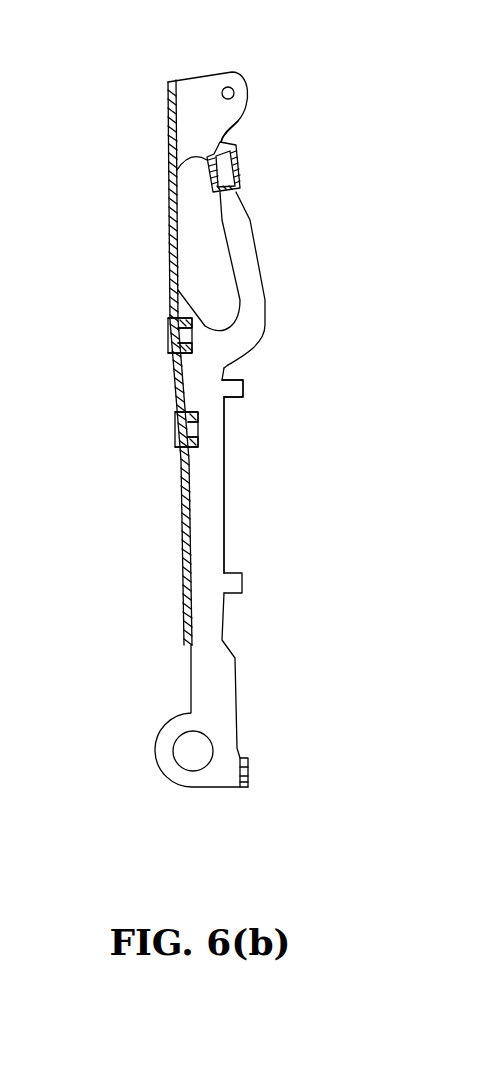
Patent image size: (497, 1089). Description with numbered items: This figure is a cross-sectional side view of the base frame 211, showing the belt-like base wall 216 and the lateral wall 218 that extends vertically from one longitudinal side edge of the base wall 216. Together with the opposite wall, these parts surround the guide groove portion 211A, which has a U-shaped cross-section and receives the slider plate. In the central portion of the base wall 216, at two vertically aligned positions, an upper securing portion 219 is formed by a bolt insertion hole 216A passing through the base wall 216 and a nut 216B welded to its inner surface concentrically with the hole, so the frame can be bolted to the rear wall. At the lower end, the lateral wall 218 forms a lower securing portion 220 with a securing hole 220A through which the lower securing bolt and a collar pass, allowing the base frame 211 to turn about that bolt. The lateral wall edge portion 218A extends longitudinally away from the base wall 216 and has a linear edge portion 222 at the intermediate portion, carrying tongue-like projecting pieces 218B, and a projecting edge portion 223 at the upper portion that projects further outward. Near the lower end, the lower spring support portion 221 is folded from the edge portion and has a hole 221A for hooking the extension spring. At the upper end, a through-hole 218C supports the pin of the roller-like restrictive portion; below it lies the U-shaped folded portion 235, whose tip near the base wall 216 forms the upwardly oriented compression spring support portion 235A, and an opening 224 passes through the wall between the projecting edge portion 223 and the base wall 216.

The base frame 211 is at (314, 34).
The guide groove portion 211A is at (210, 361).
The base wall 216 is at (168, 258).
The bolt insertion hole 216A is at (167, 327).
The nut 216B is at (170, 348).
The lateral wall 218 is at (226, 430).
The lateral wall edge portion 218A is at (226, 608).
The tongue-like projecting piece 218B is at (243, 388).
The through-hole 218C is at (237, 77).
The upper securing portion 219 is at (166, 335).
The lower securing portion 220 is at (218, 727).
The securing hole 220A is at (203, 760).
The lower spring support portion 221 is at (248, 758).
The hole 221A is at (250, 775).
The linear edge portion 222 is at (226, 495).
The projecting edge portion 223 is at (258, 268).
The opening 224 is at (180, 223).
The folded portion 235 is at (241, 168).
The compression spring support portion 235A is at (238, 122).